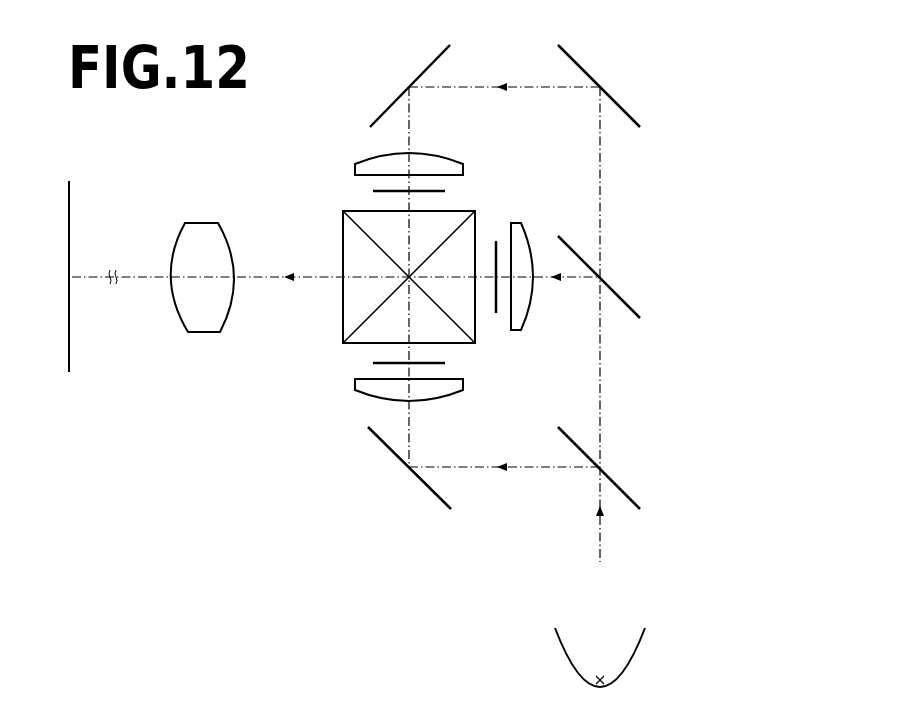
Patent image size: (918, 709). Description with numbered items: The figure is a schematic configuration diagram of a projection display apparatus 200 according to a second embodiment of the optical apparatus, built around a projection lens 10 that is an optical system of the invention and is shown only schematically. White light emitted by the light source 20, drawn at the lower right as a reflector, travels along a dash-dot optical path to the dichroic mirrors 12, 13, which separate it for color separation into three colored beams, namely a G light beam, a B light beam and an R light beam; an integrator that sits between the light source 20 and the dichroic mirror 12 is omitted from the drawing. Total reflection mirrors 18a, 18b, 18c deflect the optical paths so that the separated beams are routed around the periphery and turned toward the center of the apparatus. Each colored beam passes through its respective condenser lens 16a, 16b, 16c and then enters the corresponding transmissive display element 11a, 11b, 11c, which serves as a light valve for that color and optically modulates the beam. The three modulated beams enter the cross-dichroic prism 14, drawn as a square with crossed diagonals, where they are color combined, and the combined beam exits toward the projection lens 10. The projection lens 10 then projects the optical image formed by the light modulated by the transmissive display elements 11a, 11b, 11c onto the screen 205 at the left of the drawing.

The projection display apparatus 200 is at (302, 566).
The screen 205 is at (74, 197).
The projection lens 10 is at (202, 222).
The cross-dichroic prism 14 is at (352, 307).
The transmissive display element 11a is at (380, 362).
The transmissive display element 11b is at (495, 250).
The transmissive display element 11c is at (380, 191).
The condenser lens 16a is at (443, 397).
The condenser lens 16b is at (529, 308).
The condenser lens 16c is at (443, 155).
The total reflection mirror 18a is at (383, 446).
The total reflection mirror 18b is at (627, 108).
The total reflection mirror 18c is at (385, 108).
The dichroic mirror 12 is at (627, 492).
The dichroic mirror 13 is at (626, 300).
The light source 20 is at (643, 640).